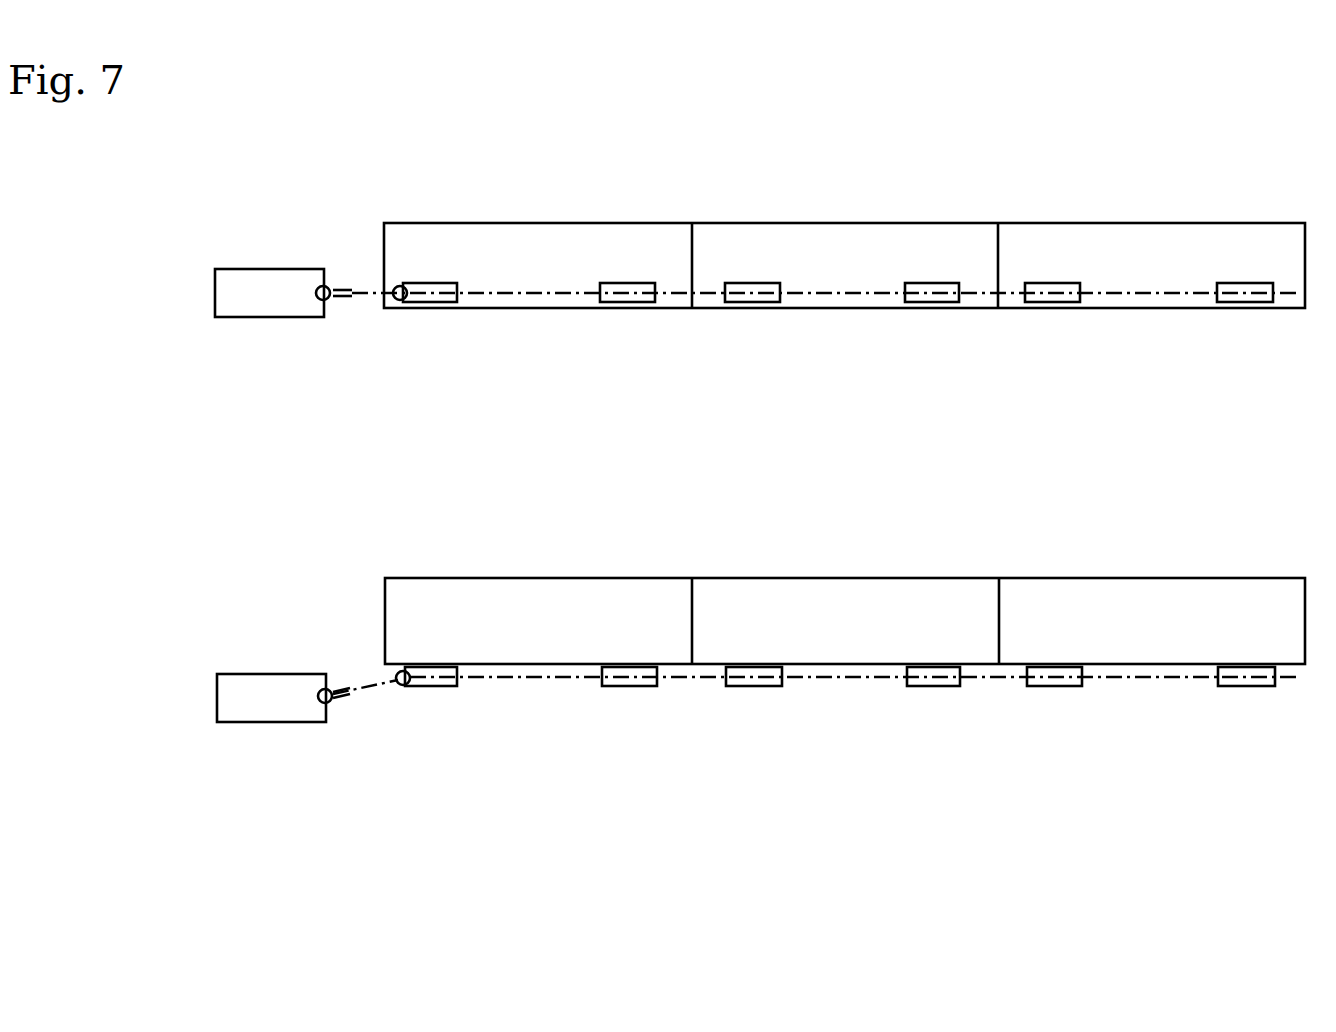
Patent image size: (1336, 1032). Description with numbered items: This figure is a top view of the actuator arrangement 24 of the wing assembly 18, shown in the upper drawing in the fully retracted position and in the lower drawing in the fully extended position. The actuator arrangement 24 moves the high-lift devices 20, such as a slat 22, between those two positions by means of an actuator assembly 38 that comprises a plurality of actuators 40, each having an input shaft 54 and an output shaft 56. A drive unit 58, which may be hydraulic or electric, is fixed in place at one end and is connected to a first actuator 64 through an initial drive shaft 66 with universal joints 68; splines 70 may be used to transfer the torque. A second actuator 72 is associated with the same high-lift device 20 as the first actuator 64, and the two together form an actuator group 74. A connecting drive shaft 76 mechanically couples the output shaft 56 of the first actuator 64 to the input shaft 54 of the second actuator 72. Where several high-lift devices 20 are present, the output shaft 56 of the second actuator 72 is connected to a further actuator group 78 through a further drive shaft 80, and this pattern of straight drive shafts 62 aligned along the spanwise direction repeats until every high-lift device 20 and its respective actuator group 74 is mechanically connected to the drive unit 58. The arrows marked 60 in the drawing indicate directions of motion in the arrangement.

The wing assembly 18 is at (393, 95).
The high-lift device 20 is at (522, 236).
The slat 22 is at (594, 240).
The actuator arrangement 24 is at (587, 377).
The actuator assembly 38 is at (734, 384).
The actuator 40 is at (430, 283).
The input shaft 54 is at (598, 303).
The output shaft 56 is at (652, 303).
The drive unit 58 is at (254, 283).
The transfer direction 60 is at (369, 374).
The straight drive shaft 62 is at (517, 295).
The first actuator 64 is at (445, 304).
The initial drive shaft 66 is at (376, 290).
The universal joint 68 is at (320, 286).
The splines 70 is at (337, 330).
The second actuator 72 is at (620, 304).
The actuator group 74 is at (564, 461).
The connecting drive shaft 76 is at (577, 247).
The further actuator group 78 is at (880, 363).
The further drive shaft 80 is at (699, 285).